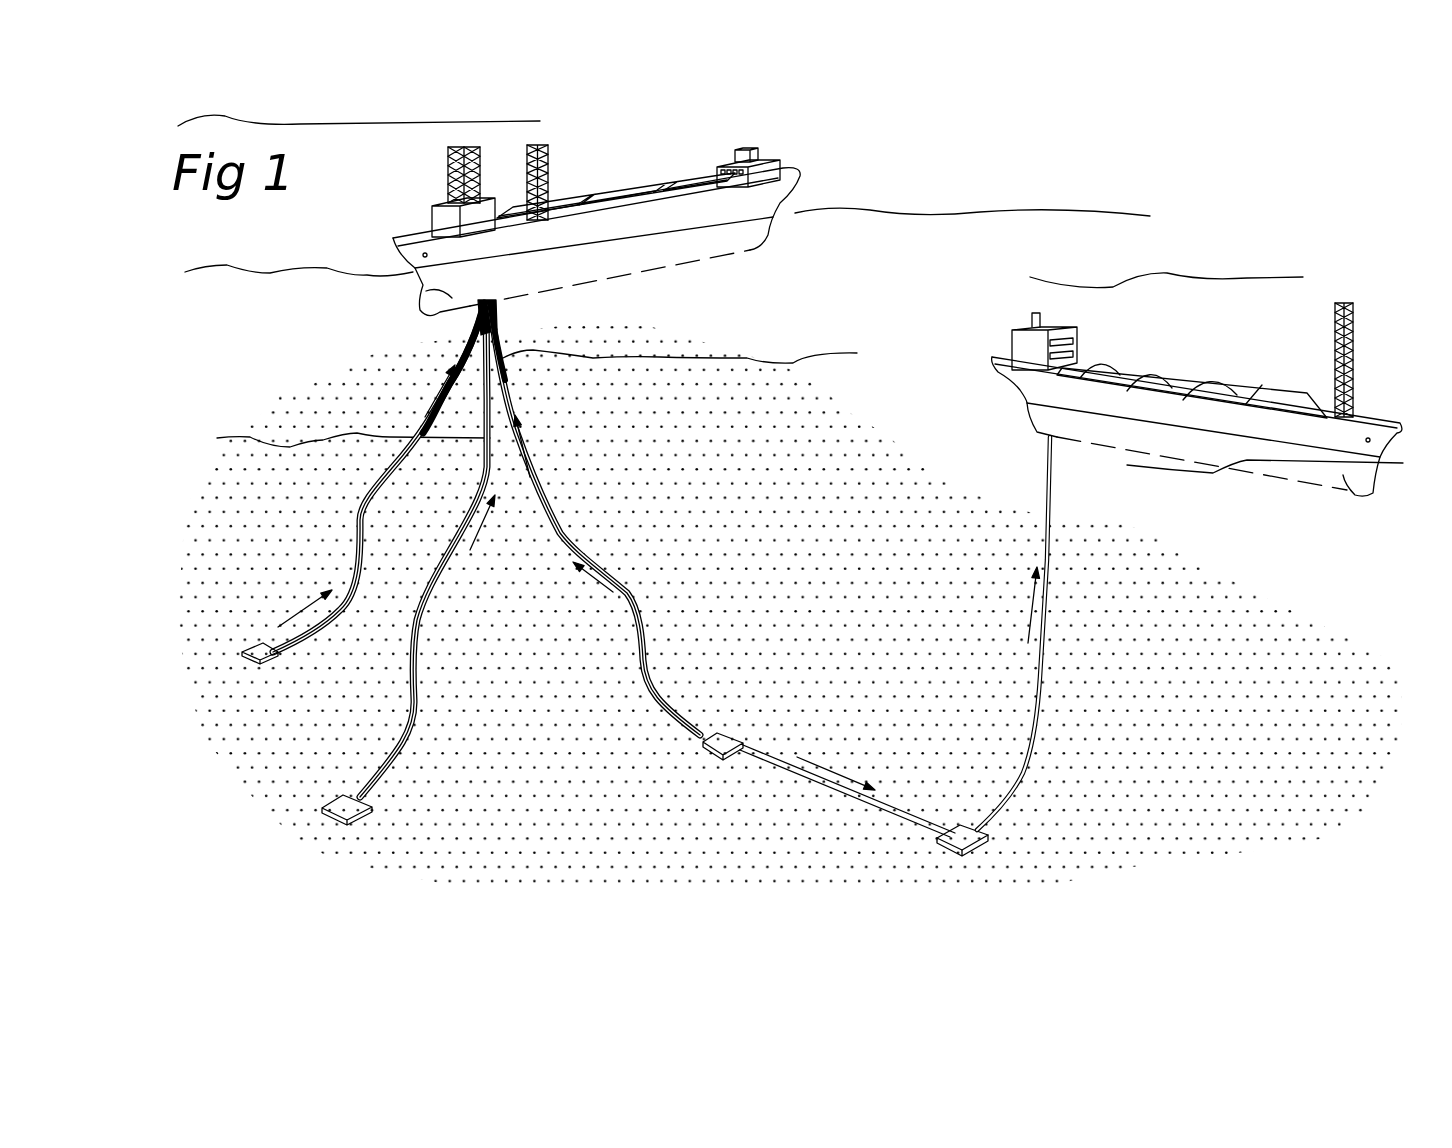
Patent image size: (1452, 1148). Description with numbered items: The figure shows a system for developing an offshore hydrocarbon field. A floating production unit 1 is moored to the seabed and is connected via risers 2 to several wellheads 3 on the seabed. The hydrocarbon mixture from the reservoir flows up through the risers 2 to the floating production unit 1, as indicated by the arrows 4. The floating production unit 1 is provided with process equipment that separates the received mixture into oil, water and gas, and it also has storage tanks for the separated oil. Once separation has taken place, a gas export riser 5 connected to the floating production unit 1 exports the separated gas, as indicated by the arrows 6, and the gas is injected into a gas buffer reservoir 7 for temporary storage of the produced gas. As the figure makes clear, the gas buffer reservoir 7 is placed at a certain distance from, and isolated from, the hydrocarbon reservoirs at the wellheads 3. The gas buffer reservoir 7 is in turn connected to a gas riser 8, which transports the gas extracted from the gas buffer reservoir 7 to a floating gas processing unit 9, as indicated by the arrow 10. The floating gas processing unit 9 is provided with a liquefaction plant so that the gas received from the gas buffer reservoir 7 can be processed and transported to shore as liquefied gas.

The floating production unit 1 is at (647, 173).
The risers 2 is at (367, 523).
The wellheads 3 is at (250, 644).
The arrows 4 is at (613, 592).
The gas export riser 5 is at (929, 822).
The arrows 6 is at (840, 773).
The gas buffer reservoir 7 is at (978, 850).
The gas riser 8 is at (1042, 667).
The floating gas processing unit 9 is at (1158, 357).
The arrow 10 is at (1035, 610).